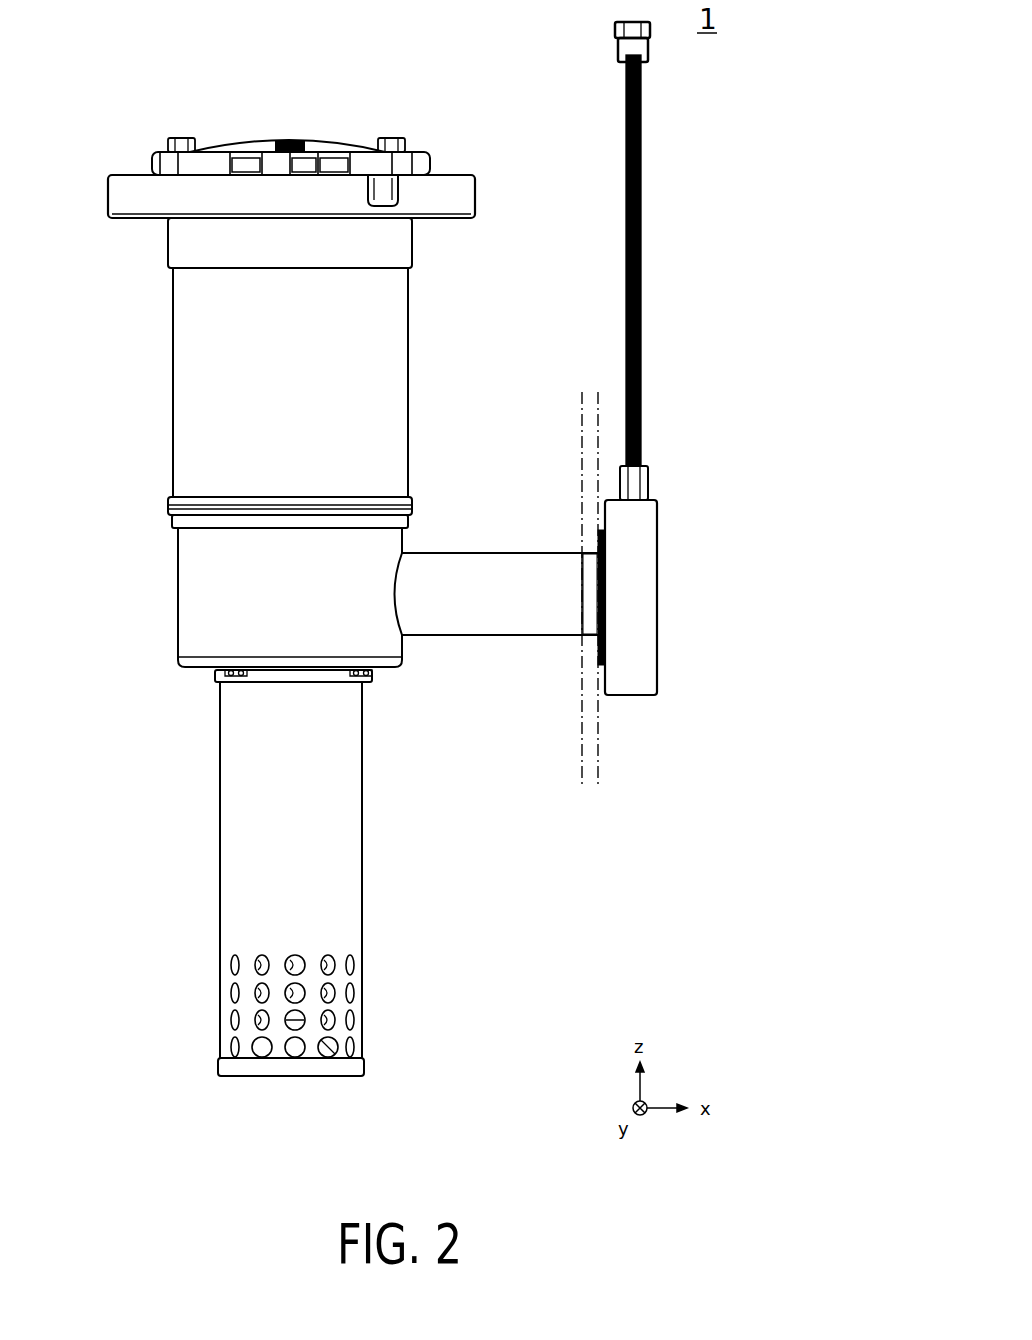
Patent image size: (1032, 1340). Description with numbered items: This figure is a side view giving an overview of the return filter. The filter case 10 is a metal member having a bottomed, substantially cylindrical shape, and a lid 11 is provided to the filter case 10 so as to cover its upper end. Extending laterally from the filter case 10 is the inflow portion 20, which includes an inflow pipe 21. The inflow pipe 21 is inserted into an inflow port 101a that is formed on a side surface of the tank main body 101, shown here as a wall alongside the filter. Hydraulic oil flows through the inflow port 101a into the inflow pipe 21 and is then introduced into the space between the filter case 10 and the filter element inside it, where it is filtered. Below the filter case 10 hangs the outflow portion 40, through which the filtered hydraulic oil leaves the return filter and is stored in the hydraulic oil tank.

The filter case 10 is at (198, 335).
The lid 11 is at (440, 190).
The inflow portion 20 is at (443, 540).
The inflow pipe 21 is at (472, 614).
The outflow portion 40 is at (190, 822).
The tank main body 101 is at (588, 750).
The inflow port 101a is at (578, 628).